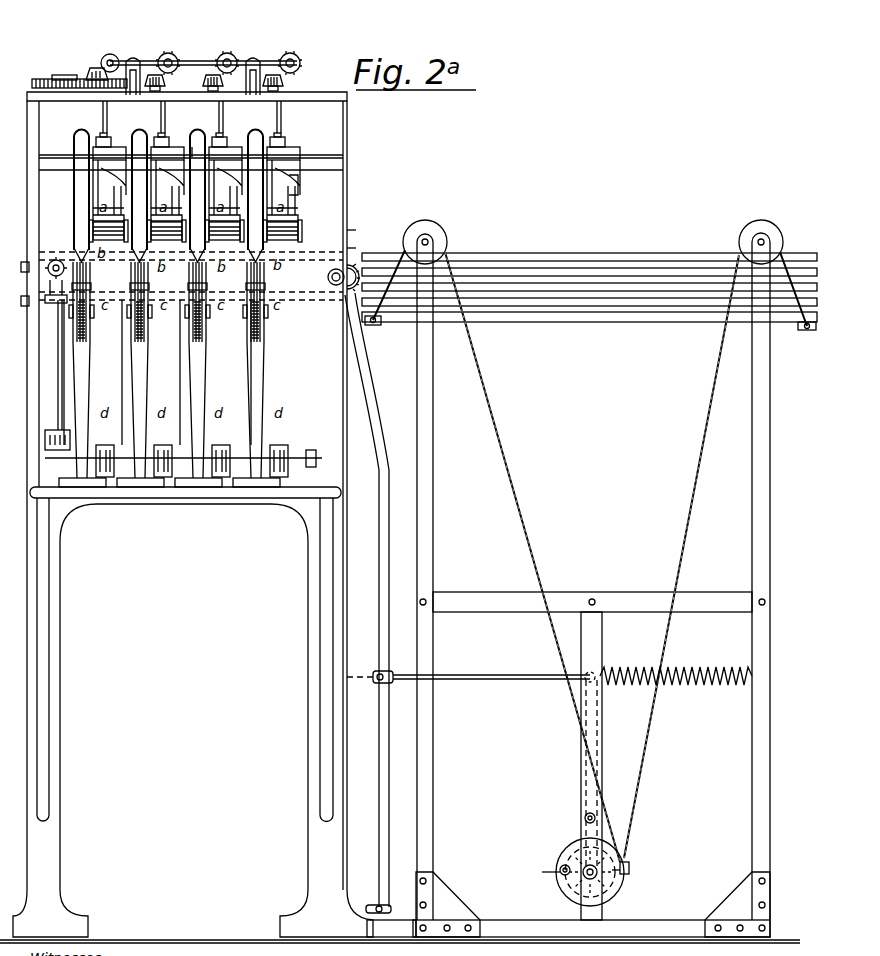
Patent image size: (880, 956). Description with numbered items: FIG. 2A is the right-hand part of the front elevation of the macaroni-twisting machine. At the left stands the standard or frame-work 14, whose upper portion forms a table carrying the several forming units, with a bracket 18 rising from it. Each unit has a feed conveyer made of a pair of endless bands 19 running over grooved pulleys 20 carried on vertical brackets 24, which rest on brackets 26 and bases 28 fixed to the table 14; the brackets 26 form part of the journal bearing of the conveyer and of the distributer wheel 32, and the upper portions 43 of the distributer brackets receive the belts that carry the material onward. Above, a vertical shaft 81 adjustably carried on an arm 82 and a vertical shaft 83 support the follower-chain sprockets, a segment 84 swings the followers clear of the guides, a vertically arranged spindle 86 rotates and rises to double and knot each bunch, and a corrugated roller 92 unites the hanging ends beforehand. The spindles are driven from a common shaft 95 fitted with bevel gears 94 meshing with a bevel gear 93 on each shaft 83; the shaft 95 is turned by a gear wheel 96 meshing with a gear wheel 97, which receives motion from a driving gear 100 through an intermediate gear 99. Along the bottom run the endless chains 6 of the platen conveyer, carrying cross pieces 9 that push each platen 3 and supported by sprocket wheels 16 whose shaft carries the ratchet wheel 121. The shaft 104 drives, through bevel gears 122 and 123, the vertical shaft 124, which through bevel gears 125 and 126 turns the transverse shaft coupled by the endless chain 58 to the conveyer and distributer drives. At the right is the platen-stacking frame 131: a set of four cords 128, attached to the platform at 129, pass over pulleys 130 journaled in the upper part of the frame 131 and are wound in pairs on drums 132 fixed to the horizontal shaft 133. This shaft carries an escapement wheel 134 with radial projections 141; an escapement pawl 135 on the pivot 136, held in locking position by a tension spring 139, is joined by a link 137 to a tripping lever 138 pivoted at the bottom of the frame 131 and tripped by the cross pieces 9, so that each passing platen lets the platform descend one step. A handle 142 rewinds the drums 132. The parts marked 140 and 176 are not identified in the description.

The platen 3 is at (533, 275).
The endless chains 6 is at (340, 296).
The cross pieces 9 is at (353, 238).
The standard or frame-work 14 is at (304, 790).
The sprocket wheels 16 is at (360, 253).
The bracket 18 is at (322, 156).
The endless bands 19 is at (204, 338).
The grooved pulleys 20 is at (262, 336).
The vertical brackets 24 is at (250, 342).
The brackets 26 is at (248, 392).
The bases 28 is at (65, 478).
The distributer wheel 32 is at (197, 152).
The upper portions of brackets 43 is at (345, 170).
The endless chain 58 is at (186, 487).
The vertical shaft 81 is at (279, 137).
The arm 82 is at (226, 147).
The vertical shaft 83 is at (215, 117).
The segment 84 is at (100, 172).
The spindle 86 is at (262, 196).
The corrugated roller 92 is at (120, 240).
The bevel gear 93 is at (231, 77).
The bevel gears 94 is at (292, 53).
The shaft 95 is at (184, 61).
The gear wheel 96 is at (110, 54).
The gear wheel 97 is at (95, 68).
The intermediate gear 99 is at (72, 91).
The driving gear 100 is at (48, 80).
The shaft 104 is at (45, 300).
The ratchet wheel 121 is at (516, 937).
The bevel gear 122 is at (53, 268).
The bevel gear 123 is at (50, 303).
The vertical shaft 124 is at (589, 328).
The bevel gear 125 is at (50, 430).
The bevel gear 126 is at (51, 447).
The cords 128 is at (712, 378).
The cord attachment point 129 is at (804, 330).
The pulleys 130 is at (752, 232).
The frame 131 is at (602, 648).
The drums 132 is at (616, 882).
The horizontal shaft 133 is at (630, 870).
The escapement wheel 134 is at (583, 874).
The escapement pawl 135 is at (618, 853).
The pivot 136 is at (585, 817).
The link 137 is at (493, 680).
The tripping lever 138 is at (383, 766).
The tension spring 139 is at (705, 668).
The cord anchor 140 is at (631, 862).
The radial projections 141 is at (582, 888).
The handle 142 is at (560, 869).
The bracket 176 is at (292, 190).